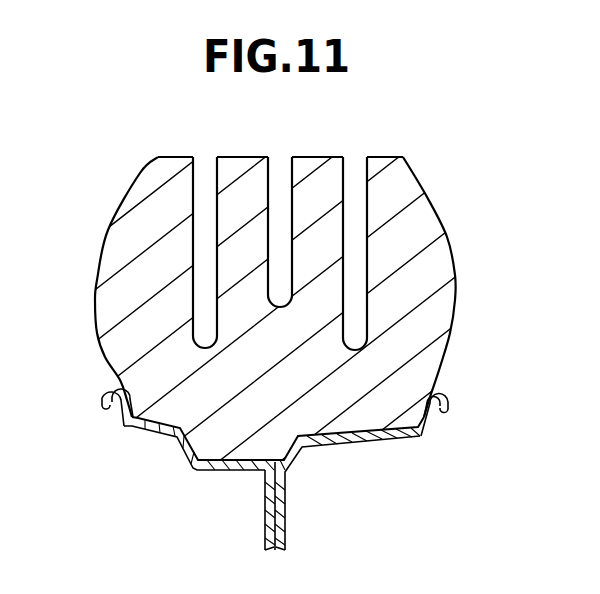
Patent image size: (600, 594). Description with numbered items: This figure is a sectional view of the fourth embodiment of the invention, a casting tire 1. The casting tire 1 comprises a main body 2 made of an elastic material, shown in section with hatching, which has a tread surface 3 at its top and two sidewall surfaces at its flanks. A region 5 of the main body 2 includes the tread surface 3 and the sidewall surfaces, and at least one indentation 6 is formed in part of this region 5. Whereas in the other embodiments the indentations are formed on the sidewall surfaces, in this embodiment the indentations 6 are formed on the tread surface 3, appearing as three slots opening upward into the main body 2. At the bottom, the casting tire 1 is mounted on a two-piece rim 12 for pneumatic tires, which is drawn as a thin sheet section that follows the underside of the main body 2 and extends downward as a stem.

The casting tire 1 is at (276, 297).
The main body 2 is at (275, 297).
The tread surface 3 is at (325, 155).
The region 5 is at (108, 232).
The indentation 6 is at (209, 170).
The two-piece rim 12 is at (290, 494).